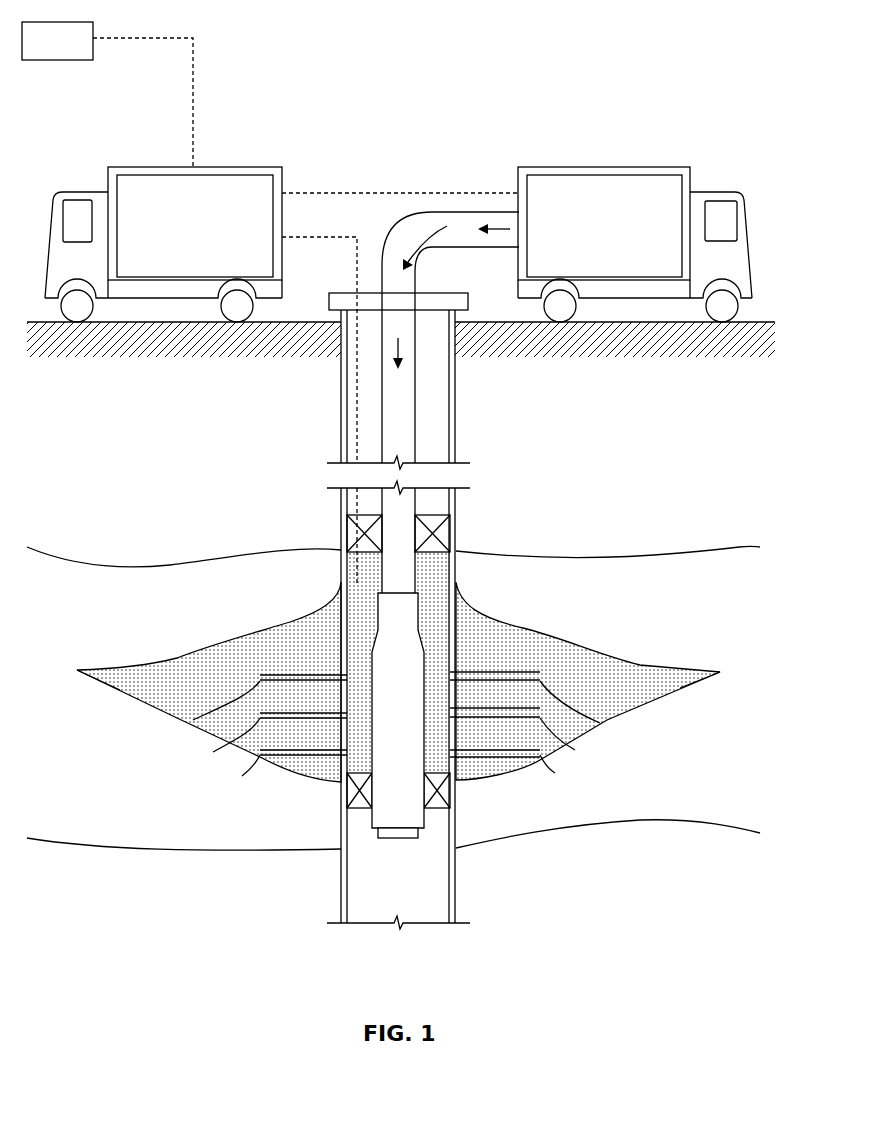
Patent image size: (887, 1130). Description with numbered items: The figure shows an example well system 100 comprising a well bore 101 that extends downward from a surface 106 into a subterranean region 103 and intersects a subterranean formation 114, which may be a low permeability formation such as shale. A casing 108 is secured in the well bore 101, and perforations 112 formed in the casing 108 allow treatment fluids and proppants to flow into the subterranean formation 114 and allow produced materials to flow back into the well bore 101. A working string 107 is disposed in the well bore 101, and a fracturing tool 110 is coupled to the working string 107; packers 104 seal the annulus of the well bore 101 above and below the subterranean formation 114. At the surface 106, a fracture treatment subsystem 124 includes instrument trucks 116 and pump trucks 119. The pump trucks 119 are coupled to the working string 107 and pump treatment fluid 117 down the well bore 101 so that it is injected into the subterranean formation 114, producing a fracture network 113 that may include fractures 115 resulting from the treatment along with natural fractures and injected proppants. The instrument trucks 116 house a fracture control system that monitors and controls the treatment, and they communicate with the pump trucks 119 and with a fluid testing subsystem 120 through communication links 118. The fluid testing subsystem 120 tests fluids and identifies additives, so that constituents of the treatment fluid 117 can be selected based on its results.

The well system 100 is at (300, 946).
The well bore 101 is at (440, 412).
The subterranean region 103 is at (167, 472).
The packers 104 is at (347, 533).
The surface 106 is at (775, 325).
The working string 107 is at (382, 425).
The casing 108 is at (342, 455).
The fracturing tool 110 is at (418, 734).
The perforations 112 is at (341, 674).
The fracture network 113 is at (362, 292).
The subterranean formation 114 is at (83, 819).
The fractures 115 is at (192, 722).
The instrument trucks 116 is at (209, 240).
The treatment fluid 117 is at (143, 685).
The communication links 118 is at (193, 118).
The pump trucks 119 is at (625, 240).
The fluid testing subsystem 120 is at (76, 53).
The fracture treatment subsystem 124 is at (430, 158).